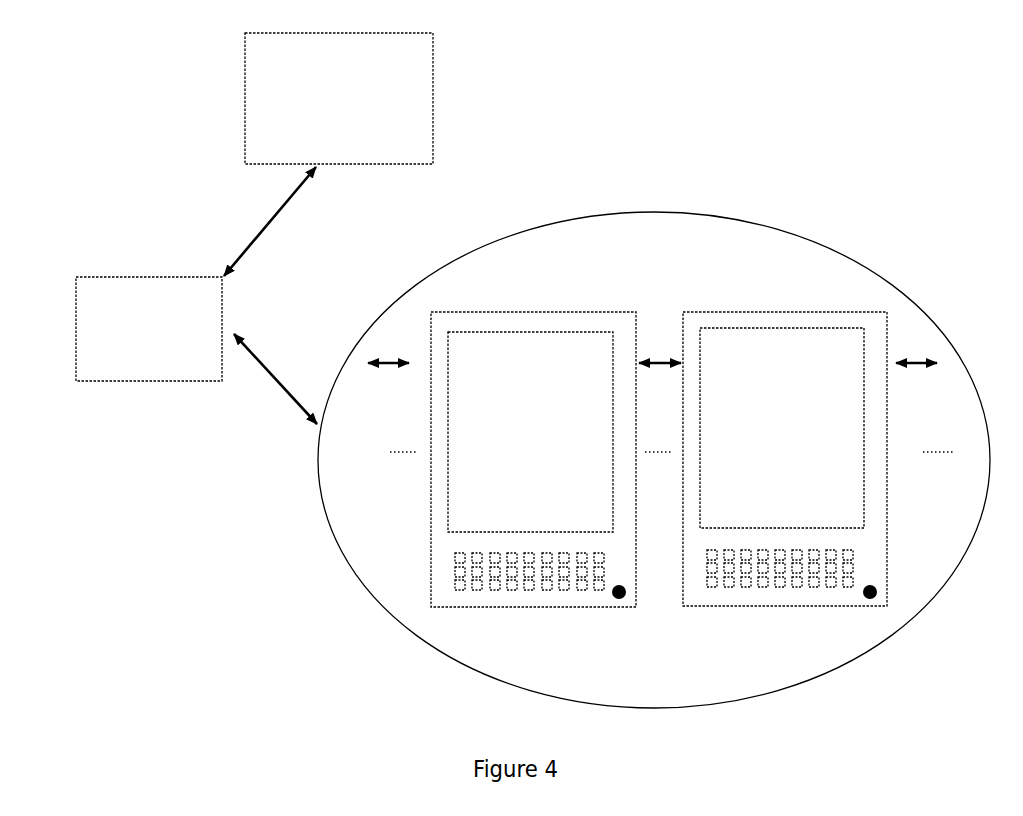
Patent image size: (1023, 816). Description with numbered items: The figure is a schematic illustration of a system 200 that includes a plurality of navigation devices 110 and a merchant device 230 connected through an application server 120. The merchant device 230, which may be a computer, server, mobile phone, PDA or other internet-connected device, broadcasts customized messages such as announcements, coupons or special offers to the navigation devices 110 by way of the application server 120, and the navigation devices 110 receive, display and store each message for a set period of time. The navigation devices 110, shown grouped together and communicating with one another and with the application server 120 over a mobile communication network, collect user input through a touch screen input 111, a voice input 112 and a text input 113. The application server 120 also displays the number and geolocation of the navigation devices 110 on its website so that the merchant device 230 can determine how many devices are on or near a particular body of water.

The system 200 is at (654, 394).
The merchant device 230 is at (339, 98).
The application server 120 is at (149, 329).
The navigation device 110 is at (740, 297).
The touch screen input 111 is at (782, 428).
The voice input 112 is at (877, 585).
The text input 113 is at (724, 602).